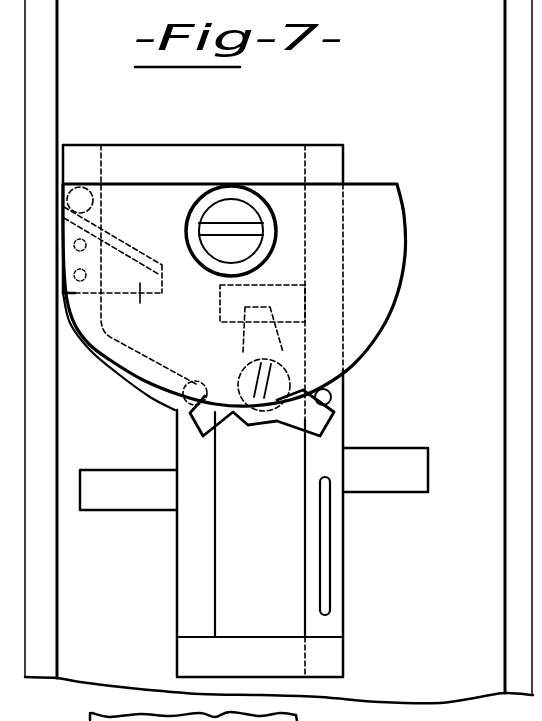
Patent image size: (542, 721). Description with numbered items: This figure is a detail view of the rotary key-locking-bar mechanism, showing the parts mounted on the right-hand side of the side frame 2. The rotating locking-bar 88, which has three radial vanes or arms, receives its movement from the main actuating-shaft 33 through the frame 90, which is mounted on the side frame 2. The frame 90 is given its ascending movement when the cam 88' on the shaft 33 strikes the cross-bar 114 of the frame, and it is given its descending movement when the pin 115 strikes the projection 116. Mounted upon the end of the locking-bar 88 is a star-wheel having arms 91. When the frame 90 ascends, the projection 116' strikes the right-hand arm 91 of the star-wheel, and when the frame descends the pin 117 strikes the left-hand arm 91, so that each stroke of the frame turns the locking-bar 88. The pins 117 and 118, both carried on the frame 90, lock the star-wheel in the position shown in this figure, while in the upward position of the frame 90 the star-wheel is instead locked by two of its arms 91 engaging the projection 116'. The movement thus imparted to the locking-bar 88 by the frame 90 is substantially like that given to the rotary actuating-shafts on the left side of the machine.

The side frame 2 is at (279, 351).
The cross-bar 114 is at (203, 282).
The cam 88' is at (234, 297).
The main actuating-shaft 33 is at (222, 212).
The pin 115 is at (84, 202).
The projection 116 is at (117, 269).
The pin 117 is at (187, 403).
The rotating locking-bar 88 is at (244, 348).
The star-wheel arm 91 is at (303, 418).
The pin 118 is at (329, 396).
The frame 90 is at (190, 548).
The projection 116' is at (290, 546).